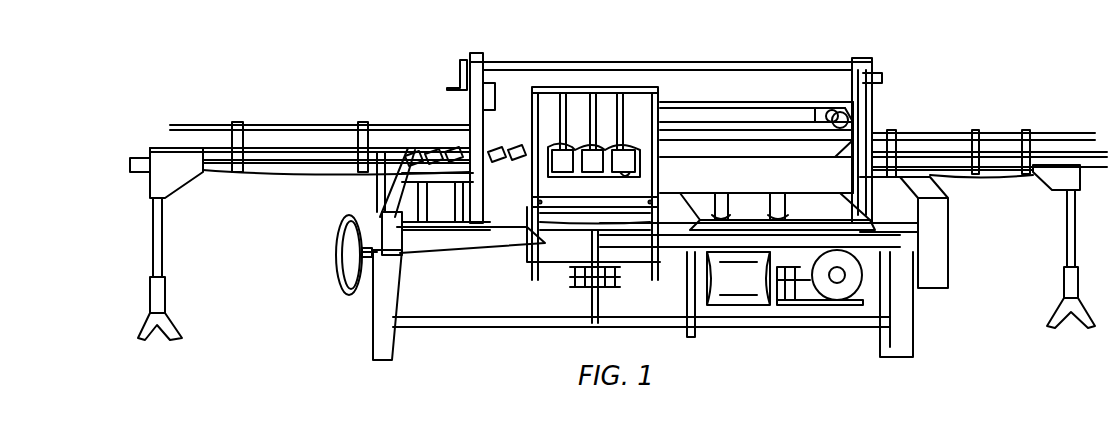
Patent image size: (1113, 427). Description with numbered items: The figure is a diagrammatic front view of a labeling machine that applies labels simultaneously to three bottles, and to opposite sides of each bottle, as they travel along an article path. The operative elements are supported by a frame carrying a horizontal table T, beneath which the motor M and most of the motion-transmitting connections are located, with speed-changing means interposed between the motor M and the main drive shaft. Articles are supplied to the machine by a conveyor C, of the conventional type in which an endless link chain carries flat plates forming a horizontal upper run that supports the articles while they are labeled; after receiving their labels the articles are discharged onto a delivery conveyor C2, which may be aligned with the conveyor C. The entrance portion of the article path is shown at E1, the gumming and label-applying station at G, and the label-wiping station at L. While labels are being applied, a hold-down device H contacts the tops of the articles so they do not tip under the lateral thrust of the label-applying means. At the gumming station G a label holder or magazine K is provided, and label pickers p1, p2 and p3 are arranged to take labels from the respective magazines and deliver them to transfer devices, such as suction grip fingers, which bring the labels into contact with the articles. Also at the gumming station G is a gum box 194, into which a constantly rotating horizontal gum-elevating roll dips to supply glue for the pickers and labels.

The conveyor C is at (298, 137).
The roller feed table E1 is at (413, 114).
The gumming and label-applying station G is at (652, 54).
The label-wiping station L is at (800, 60).
The hold-down device H is at (737, 88).
The delivery conveyor C2 is at (1068, 98).
The label picker p3 is at (617, 148).
The label picker p2 is at (592, 135).
The label picker p1 is at (560, 137).
The label holder or magazine K is at (533, 202).
The gum box 194 is at (553, 228).
The horizontal table T is at (910, 237).
The motor M is at (837, 290).